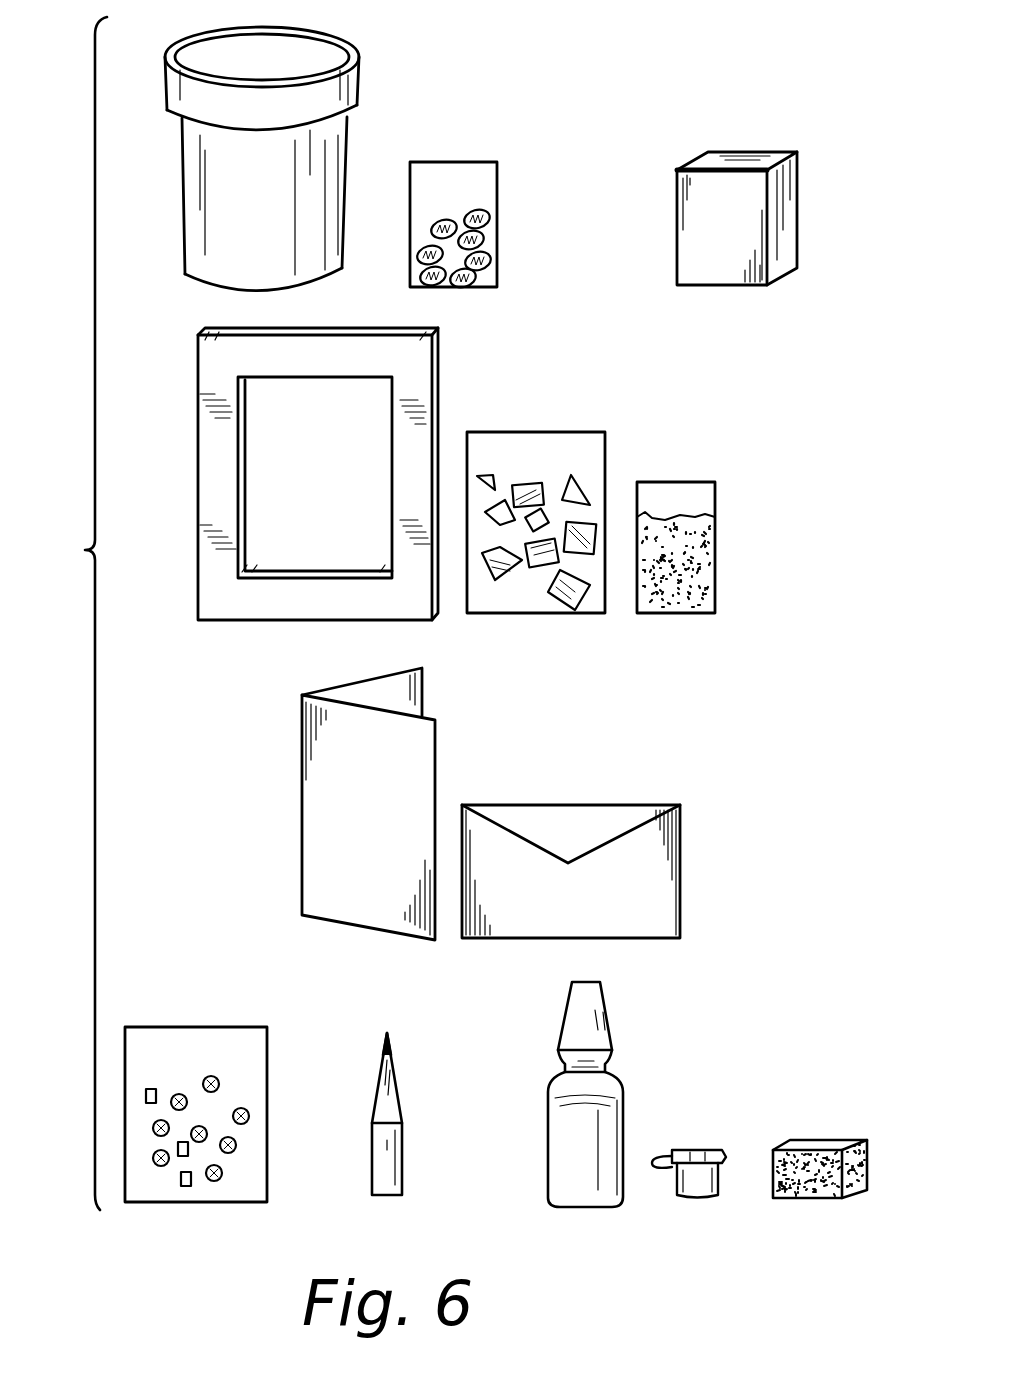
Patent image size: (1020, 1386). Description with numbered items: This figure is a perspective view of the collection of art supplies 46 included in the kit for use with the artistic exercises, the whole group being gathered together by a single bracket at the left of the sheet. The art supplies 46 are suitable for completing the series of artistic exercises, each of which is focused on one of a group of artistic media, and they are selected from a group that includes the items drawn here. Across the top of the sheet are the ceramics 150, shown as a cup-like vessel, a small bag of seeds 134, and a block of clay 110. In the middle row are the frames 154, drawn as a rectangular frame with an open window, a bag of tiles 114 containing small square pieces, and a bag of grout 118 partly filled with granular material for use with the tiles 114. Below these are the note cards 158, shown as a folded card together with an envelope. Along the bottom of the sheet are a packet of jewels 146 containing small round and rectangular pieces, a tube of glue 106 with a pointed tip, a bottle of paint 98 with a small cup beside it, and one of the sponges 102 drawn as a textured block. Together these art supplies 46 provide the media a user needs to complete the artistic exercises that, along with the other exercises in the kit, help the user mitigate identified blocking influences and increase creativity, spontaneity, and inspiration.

The art supplies 46 is at (72, 613).
The ceramics 150 is at (332, 173).
The seeds 134 is at (487, 197).
The clay 110 is at (787, 263).
The frames 154 is at (213, 612).
The tiles 114 is at (594, 437).
The grout 118 is at (700, 492).
The note cards 158 is at (418, 778).
The jewels 146 is at (258, 1060).
The glue 106 is at (400, 1153).
The paint 98 is at (612, 1110).
The sponges 102 is at (843, 1145).